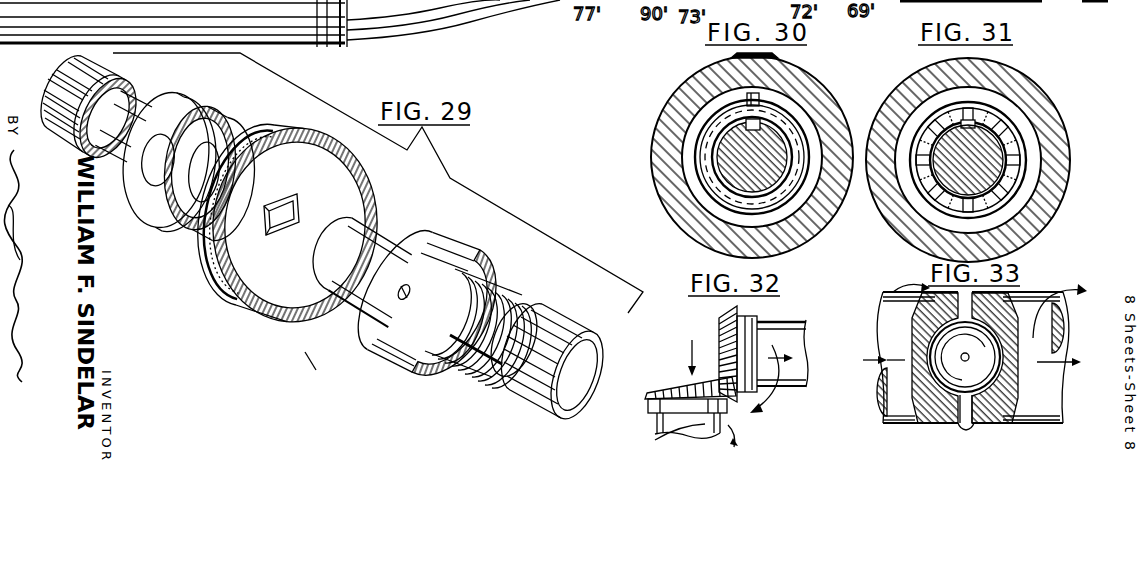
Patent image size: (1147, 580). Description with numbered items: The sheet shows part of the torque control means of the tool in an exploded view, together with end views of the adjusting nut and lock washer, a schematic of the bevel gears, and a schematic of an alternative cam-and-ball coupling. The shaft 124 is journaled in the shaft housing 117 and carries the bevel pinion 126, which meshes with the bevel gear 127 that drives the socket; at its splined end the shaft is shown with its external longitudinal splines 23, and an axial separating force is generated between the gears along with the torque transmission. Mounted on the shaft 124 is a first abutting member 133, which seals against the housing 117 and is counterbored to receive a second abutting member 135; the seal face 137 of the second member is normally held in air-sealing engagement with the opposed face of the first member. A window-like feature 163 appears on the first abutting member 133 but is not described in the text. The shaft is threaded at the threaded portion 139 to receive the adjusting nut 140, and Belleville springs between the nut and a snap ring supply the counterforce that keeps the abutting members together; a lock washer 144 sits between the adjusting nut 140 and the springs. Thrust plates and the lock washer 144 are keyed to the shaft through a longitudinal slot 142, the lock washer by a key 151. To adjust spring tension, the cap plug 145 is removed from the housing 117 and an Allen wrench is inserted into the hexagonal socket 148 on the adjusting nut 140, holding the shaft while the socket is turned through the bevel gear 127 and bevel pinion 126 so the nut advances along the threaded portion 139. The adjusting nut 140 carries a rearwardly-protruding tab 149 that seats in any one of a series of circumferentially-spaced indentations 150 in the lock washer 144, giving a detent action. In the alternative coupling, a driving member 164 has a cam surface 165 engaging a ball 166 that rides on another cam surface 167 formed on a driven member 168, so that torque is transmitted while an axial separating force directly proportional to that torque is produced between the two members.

In FIG. 29, the splined shaft 23 is at (56, 86).
In FIG. 30, the shaft housing 117 is at (685, 227).
In FIG. 31, the shaft housing 117 is at (914, 242).
In FIG. 29, the shaft 124 is at (384, 235).
In FIG. 30, the shaft 124 is at (737, 165).
In FIG. 31, the shaft 124 is at (990, 176).
In FIG. 29, the bevel pinion 126 is at (594, 358).
In FIG. 32, the bevel pinion 126 is at (719, 332).
In FIG. 32, the bevel gear 127 is at (649, 405).
In FIG. 29, the first abutting member 133 is at (380, 190).
In FIG. 29, the second abutting member 135 is at (176, 92).
In FIG. 29, the seal face 137 is at (237, 114).
In FIG. 29, the threaded portion 139 is at (478, 376).
In FIG. 30, the threaded portion 139 is at (700, 128).
In FIG. 29, the adjusting nut 140 is at (488, 261).
In FIG. 30, the adjusting nut 140 is at (701, 108).
In FIG. 29, the longitudinal slot 142 is at (521, 313).
In FIG. 31, the longitudinal slot 142 is at (1021, 160).
In FIG. 31, the lock washer 144 is at (1016, 150).
In FIG. 30, the cap plug 145 is at (736, 56).
In FIG. 29, the hexagonal socket 148 is at (402, 300).
In FIG. 30, the tab 149 is at (761, 99).
In FIG. 31, the grooves or indentations 150 is at (1004, 126).
In FIG. 31, the key 151 is at (962, 120).
In FIG. 29, the window 163 is at (266, 206).
In FIG. 33, the driving member 164 is at (1040, 410).
In FIG. 33, the cam surface 165 is at (974, 416).
In FIG. 33, the ball 166 is at (977, 366).
In FIG. 33, the cam surface 167 is at (962, 410).
In FIG. 33, the driven member 168 is at (897, 412).